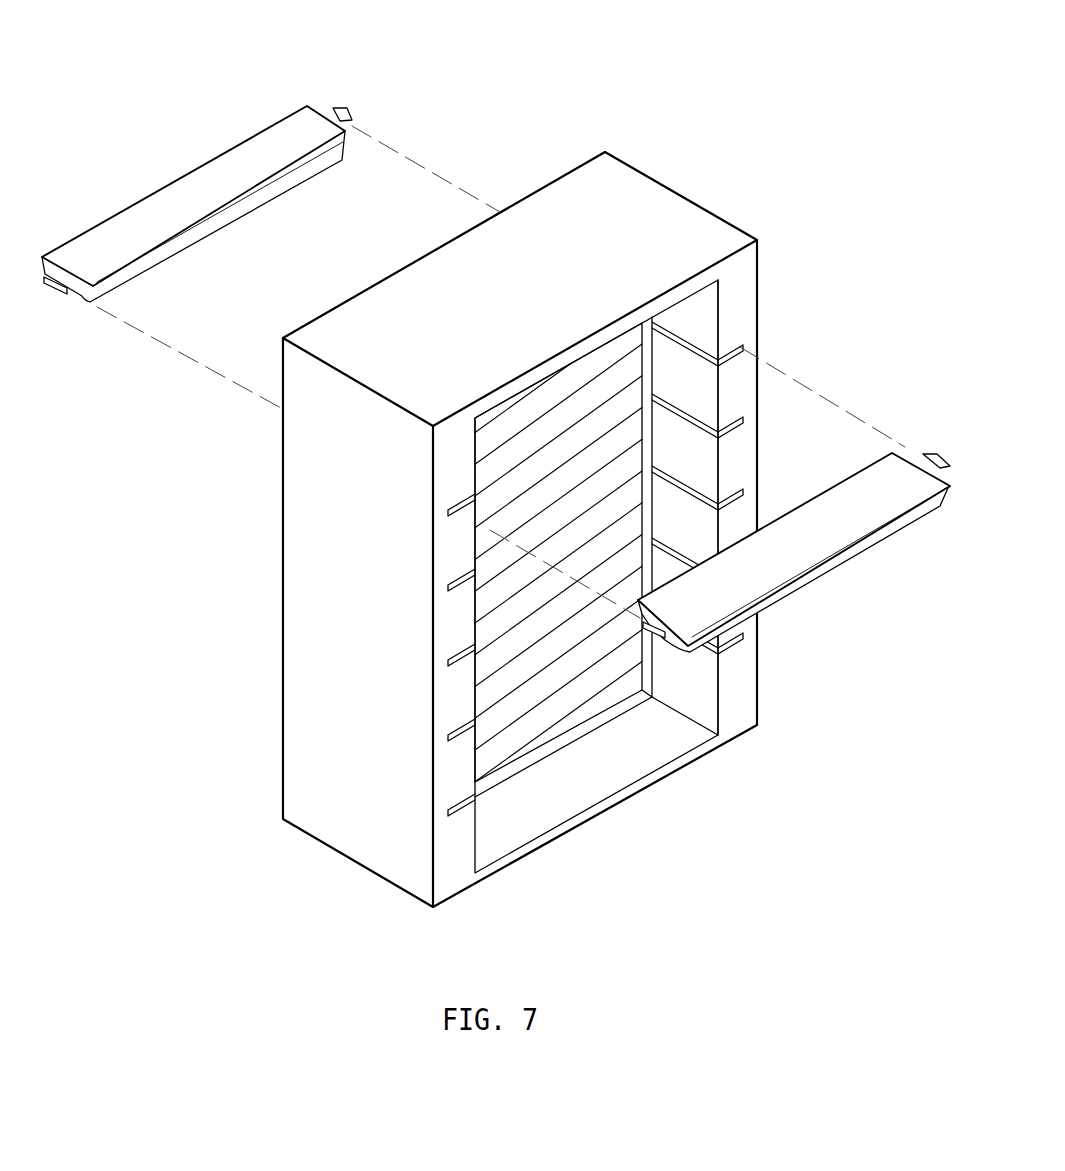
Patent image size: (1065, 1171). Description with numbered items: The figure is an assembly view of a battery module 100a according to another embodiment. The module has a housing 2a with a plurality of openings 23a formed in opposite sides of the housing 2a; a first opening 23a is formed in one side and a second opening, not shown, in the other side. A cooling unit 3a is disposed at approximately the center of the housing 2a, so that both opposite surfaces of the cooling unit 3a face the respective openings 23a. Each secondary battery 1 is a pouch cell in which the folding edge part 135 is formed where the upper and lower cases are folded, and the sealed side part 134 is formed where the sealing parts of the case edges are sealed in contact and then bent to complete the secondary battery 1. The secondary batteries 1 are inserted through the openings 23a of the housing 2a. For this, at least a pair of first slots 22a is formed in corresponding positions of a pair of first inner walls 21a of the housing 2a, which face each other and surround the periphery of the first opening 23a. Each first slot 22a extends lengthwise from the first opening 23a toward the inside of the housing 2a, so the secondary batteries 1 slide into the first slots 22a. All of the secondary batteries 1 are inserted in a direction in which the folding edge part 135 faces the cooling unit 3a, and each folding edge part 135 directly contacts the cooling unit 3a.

The secondary battery 1 is at (316, 104).
The battery module 100a is at (694, 97).
The housing 2a is at (704, 213).
The cooling unit 3a is at (578, 706).
The first inner walls 21a is at (692, 445).
The first slots 22a is at (448, 512).
The openings 23a is at (626, 408).
The sealed side part 134 is at (175, 180).
The folding edge part 135 is at (225, 207).